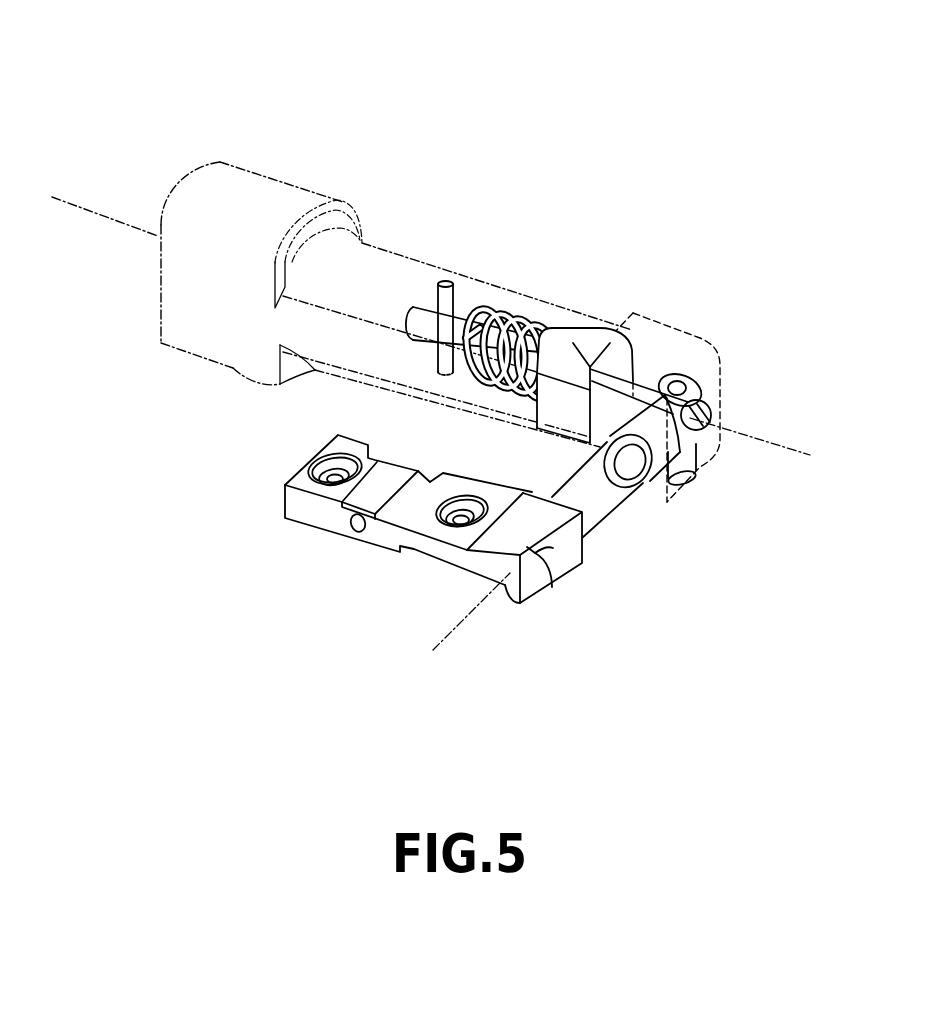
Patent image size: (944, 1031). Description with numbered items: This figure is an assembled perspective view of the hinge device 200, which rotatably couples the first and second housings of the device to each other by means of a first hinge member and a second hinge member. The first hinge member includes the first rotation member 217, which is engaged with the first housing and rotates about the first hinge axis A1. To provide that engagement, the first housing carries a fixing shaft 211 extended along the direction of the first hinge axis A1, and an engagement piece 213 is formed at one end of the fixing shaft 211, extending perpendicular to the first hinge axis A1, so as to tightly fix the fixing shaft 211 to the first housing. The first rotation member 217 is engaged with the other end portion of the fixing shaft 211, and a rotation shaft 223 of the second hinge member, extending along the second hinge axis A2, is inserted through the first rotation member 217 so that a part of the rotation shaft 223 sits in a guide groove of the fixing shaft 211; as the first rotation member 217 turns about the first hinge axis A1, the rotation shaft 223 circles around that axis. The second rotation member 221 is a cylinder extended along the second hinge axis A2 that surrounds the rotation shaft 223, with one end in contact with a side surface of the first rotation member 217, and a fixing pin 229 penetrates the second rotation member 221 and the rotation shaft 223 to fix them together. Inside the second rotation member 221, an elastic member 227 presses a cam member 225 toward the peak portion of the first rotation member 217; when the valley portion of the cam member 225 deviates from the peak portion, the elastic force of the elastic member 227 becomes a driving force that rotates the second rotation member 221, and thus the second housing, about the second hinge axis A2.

The hinge device 200 is at (446, 52).
The second rotation member 221 is at (263, 192).
The first rotation member 217 is at (687, 352).
The fixing pin 229 is at (450, 307).
The elastic member 227 is at (517, 320).
The cam member 225 is at (575, 328).
The rotation shaft 223 is at (710, 408).
The fixing shaft 211 is at (597, 508).
The engagement piece 213 is at (320, 517).
The first hinge axis A1 is at (472, 614).
The second hinge axis A2 is at (788, 452).